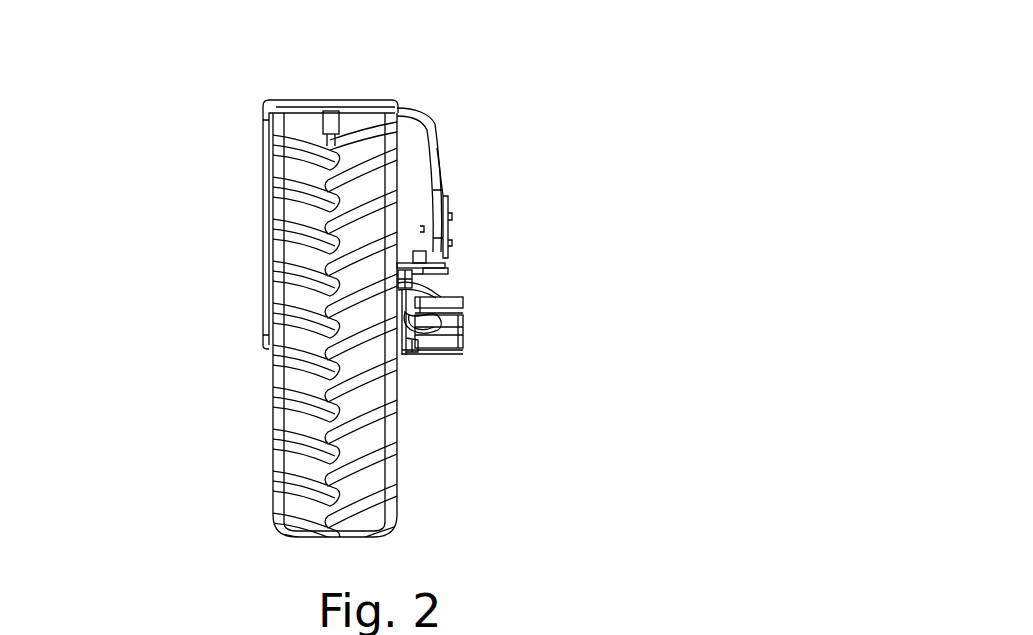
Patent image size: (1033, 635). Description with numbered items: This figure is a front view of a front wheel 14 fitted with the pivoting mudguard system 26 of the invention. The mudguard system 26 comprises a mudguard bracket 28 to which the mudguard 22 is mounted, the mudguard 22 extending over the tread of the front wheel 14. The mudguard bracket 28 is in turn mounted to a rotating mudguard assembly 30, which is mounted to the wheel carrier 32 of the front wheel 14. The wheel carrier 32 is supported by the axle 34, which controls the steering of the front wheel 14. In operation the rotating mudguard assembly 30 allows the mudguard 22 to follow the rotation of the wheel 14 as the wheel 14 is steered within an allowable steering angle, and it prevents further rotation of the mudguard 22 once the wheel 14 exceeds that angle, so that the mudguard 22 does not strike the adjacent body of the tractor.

The front wheel 14 is at (305, 373).
The mudguard 22 is at (275, 103).
The mudguard system 26 is at (593, 160).
The mudguard bracket 28 is at (433, 154).
The rotating mudguard assembly 30 is at (420, 265).
The wheel carrier 32 is at (402, 328).
The axle 34 is at (450, 347).